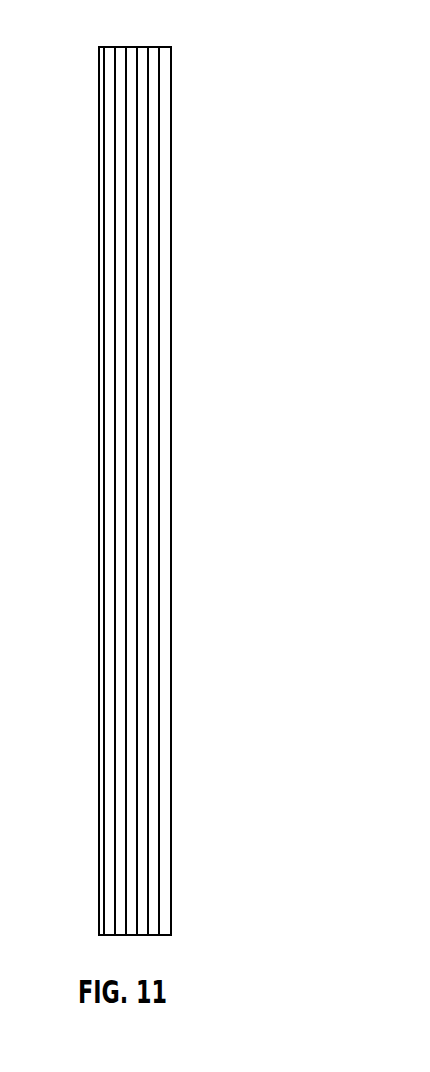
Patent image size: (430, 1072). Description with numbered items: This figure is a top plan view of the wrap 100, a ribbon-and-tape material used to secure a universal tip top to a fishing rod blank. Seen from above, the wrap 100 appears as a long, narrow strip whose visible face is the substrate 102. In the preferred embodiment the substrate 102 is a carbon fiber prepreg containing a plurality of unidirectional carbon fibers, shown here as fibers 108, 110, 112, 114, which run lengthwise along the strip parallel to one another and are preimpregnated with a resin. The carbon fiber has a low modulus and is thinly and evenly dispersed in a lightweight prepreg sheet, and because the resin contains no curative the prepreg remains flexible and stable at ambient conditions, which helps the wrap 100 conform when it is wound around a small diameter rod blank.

The wrap 100 is at (305, 65).
The substrate 102 is at (160, 722).
The fiber 108 is at (147, 572).
The fiber 110 is at (137, 520).
The fiber 112 is at (115, 470).
The fiber 114 is at (105, 367).